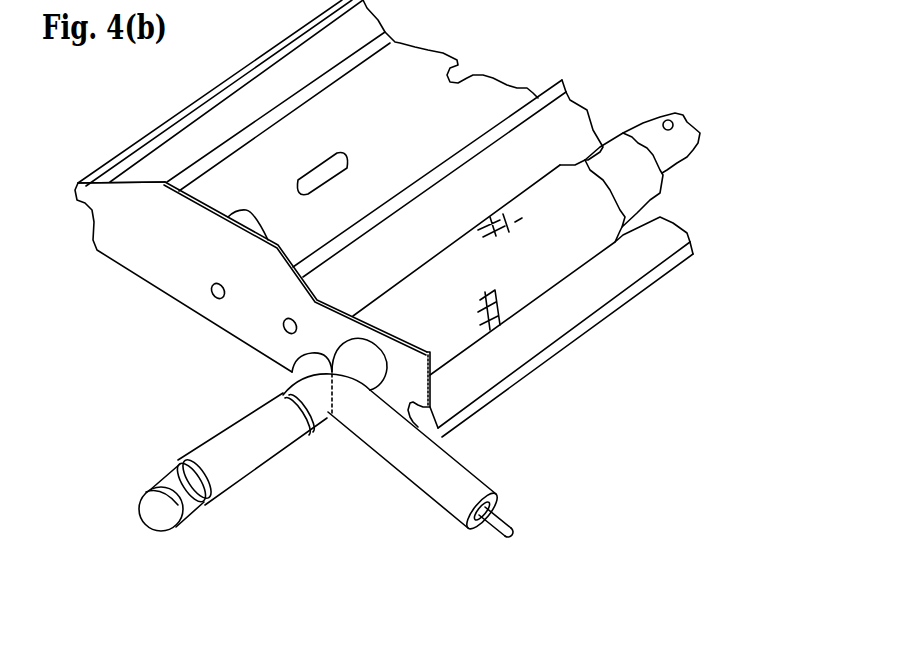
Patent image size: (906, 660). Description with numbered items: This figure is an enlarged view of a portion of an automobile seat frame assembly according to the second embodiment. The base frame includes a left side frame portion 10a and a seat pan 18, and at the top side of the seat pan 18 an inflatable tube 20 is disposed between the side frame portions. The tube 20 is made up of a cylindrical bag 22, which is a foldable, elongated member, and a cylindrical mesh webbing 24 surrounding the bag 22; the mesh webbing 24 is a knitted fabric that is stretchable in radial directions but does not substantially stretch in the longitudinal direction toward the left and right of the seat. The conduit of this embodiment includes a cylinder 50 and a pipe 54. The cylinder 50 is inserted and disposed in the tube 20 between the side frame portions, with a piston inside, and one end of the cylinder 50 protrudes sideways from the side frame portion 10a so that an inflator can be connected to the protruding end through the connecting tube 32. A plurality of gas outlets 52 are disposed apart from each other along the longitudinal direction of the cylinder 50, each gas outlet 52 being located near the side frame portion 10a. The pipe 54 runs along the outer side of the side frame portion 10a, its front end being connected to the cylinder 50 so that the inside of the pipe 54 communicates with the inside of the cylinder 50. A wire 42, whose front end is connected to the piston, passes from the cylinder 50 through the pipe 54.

The seat pan 18 is at (560, 111).
The inflatable tube 20 is at (540, 313).
The cylindrical bag 22 is at (640, 187).
The cylindrical mesh webbing 24 is at (578, 250).
The cylinder 50 is at (673, 152).
The gas outlets 52 is at (667, 117).
The left side frame portion 10a is at (173, 262).
The connecting tube 32 is at (223, 447).
The pipe 54 is at (466, 481).
The wire 42 is at (502, 521).